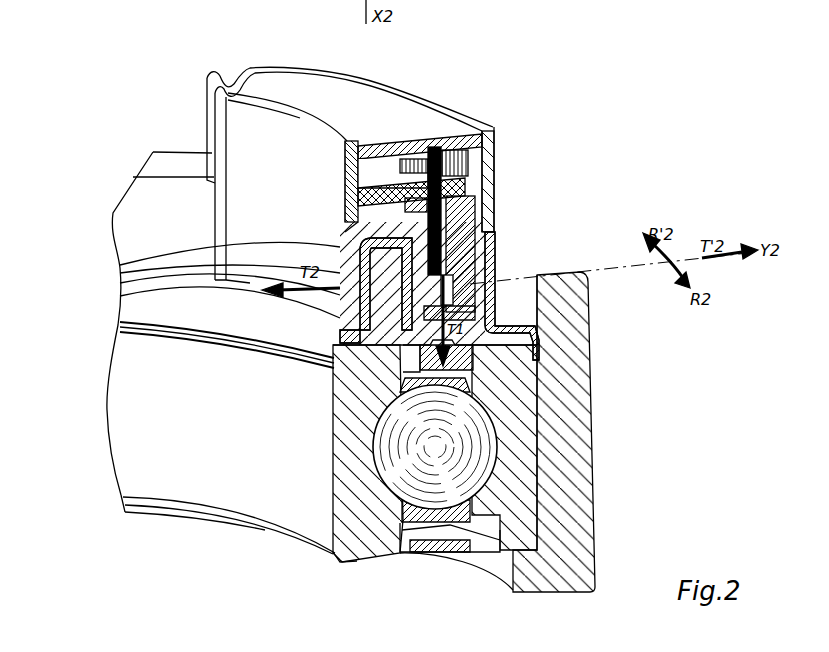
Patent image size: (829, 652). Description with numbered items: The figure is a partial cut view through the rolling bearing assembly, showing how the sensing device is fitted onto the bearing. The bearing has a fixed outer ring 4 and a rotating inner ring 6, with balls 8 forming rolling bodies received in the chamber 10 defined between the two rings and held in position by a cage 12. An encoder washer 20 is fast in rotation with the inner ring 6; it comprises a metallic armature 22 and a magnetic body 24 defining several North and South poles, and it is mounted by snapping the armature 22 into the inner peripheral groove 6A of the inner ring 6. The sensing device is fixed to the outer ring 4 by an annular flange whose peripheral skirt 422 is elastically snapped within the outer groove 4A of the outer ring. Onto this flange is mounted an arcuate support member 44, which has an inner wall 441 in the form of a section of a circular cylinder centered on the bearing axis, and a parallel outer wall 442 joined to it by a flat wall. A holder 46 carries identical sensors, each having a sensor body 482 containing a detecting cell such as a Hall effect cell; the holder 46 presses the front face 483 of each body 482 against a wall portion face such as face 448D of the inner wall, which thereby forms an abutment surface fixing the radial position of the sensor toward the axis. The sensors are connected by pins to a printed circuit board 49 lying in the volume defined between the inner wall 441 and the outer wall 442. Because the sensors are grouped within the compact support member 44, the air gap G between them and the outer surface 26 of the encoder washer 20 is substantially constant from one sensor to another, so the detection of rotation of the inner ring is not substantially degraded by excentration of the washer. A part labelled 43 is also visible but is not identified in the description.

The outer ring 4 is at (522, 412).
The outer groove 4A is at (537, 361).
The inner ring 6 is at (232, 357).
The inner peripheral groove 6A is at (172, 344).
The balls 8 is at (435, 447).
The chamber 10 is at (458, 560).
The cage 12 is at (446, 522).
The encoder washer 20 is at (59, 281).
The metallic armature 22 is at (156, 303).
The magnetic body 24 is at (177, 253).
The outer surface 26 is at (441, 250).
The sensor carrier plate 43 is at (413, 136).
The support member 44 is at (207, 79).
The holder 46 is at (497, 214).
The printed circuit board 49 is at (381, 165).
The peripheral skirt 422 is at (540, 343).
The inner wall 441 is at (342, 163).
The outer wall 442 is at (495, 150).
The wall portion face 448D is at (400, 270).
The sensor body 482 is at (414, 300).
The front face 483 is at (342, 336).
The air gap G is at (352, 196).